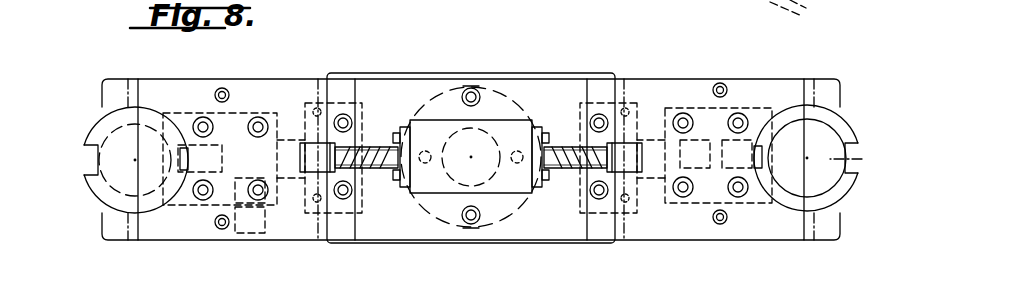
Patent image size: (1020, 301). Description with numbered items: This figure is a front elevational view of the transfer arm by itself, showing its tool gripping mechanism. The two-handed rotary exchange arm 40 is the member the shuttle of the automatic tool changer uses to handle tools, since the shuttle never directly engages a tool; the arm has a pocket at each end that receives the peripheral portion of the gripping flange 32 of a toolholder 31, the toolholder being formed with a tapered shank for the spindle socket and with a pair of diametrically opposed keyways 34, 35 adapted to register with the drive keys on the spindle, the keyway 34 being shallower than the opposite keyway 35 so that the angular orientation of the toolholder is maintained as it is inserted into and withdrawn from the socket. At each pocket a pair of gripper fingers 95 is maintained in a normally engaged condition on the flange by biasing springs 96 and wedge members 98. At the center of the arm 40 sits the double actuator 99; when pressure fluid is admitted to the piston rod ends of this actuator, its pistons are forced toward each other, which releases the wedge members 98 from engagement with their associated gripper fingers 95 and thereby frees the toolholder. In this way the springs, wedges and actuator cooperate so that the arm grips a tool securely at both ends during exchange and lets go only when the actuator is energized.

The toolholder 31 is at (95, 200).
The gripping flange 32 is at (833, 118).
The keyway 34 is at (163, 203).
The keyway 35 is at (83, 160).
The rotary exchange arm 40 is at (400, 88).
The gripper fingers 95 is at (112, 97).
The biasing springs 96 is at (375, 183).
The wedge members 98 is at (318, 148).
The double actuator 99 is at (495, 117).